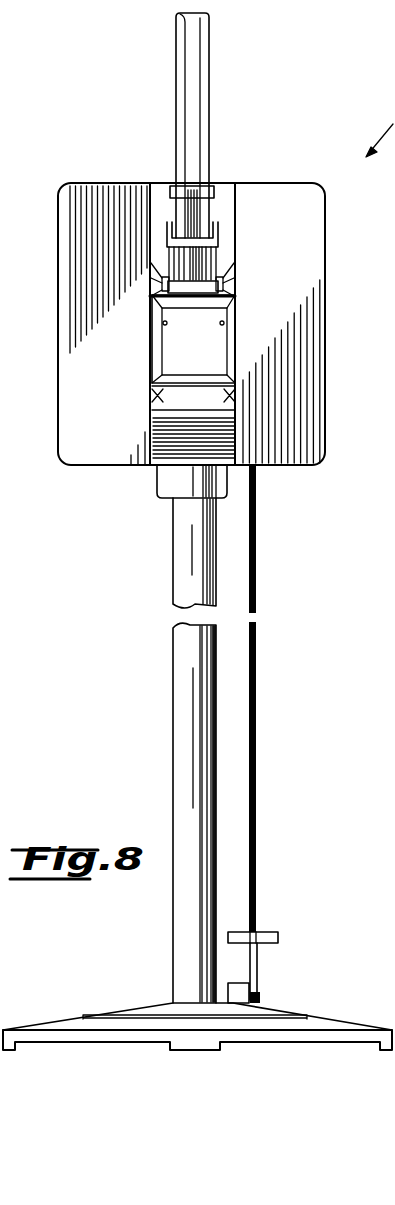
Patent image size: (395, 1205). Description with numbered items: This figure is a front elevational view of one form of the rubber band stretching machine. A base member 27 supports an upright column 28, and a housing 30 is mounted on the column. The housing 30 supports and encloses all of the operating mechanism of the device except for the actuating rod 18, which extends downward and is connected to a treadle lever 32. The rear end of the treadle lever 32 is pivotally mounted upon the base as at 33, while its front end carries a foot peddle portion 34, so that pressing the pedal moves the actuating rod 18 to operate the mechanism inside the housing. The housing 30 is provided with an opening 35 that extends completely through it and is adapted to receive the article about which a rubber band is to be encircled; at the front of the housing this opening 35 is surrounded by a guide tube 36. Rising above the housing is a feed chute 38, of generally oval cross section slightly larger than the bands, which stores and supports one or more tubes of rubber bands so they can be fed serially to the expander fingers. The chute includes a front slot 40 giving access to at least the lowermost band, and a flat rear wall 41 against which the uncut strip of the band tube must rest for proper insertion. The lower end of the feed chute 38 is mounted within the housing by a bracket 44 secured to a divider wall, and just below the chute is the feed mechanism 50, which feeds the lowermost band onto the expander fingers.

The actuating rod 18 is at (256, 651).
The base member 27 is at (318, 1034).
The upright column 28 is at (185, 723).
The housing 30 is at (326, 440).
The treadle lever 32 is at (258, 958).
The pivot mounting of the treadle lever on the base 33 is at (260, 992).
The foot peddle portion 34 is at (280, 934).
The opening 35 is at (196, 346).
The guide tube 36 is at (241, 326).
The feed chute 38 is at (213, 78).
The front slot 40 is at (198, 117).
The flat rear wall 41 is at (192, 47).
The bracket 44 is at (215, 190).
The feed mechanism 50 is at (226, 248).